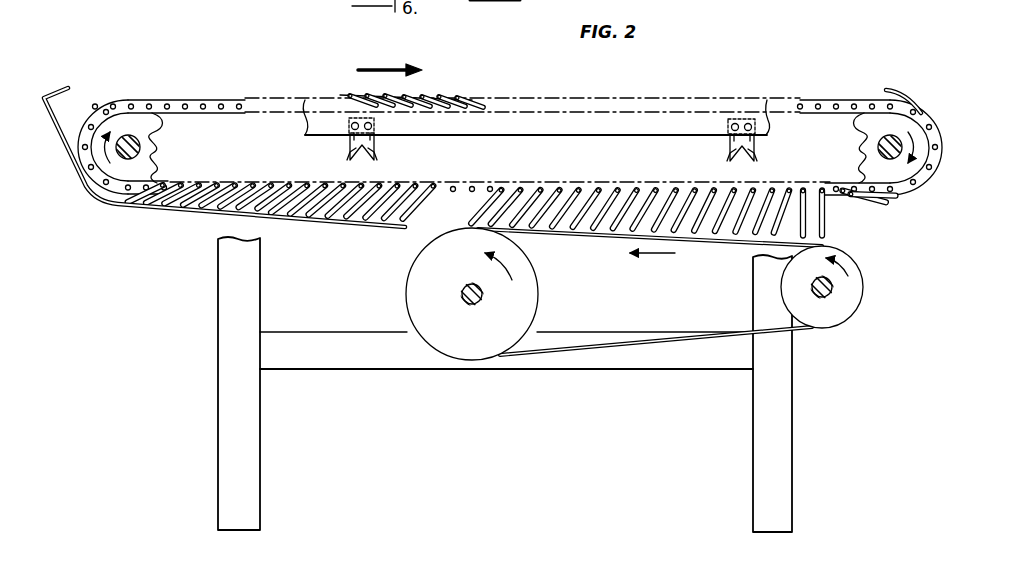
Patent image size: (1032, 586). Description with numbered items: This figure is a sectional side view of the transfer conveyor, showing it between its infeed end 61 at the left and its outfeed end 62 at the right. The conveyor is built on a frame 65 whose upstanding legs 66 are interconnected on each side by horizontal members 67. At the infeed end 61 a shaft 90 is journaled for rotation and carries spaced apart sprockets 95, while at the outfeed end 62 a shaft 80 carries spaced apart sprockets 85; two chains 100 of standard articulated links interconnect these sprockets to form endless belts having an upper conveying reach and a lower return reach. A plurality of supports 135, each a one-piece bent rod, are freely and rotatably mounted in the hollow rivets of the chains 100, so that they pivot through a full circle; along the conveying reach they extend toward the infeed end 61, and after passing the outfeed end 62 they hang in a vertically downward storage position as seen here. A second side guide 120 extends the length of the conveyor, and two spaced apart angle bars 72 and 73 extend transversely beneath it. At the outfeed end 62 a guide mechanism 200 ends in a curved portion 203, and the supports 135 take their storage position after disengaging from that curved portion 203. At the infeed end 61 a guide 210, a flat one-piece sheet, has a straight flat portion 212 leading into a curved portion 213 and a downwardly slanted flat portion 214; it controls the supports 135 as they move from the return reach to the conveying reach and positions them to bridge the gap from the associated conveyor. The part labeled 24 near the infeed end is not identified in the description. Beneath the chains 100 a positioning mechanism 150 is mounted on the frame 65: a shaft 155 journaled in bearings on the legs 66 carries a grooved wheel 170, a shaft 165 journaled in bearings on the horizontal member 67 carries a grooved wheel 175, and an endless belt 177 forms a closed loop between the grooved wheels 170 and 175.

The infeed end 61 is at (503, 137).
The guide plate 24 is at (223, 156).
The shaft 90 is at (131, 137).
The sprockets 95 is at (172, 151).
The straight flat portion 212 is at (223, 178).
The curved portion 213 is at (224, 178).
The guide 210 is at (176, 215).
The downwardly slanted flat portion 214 is at (263, 224).
The supports 135 is at (458, 86).
The angle bar 72 is at (376, 155).
The second side guide 120 is at (622, 137).
The angle bar 73 is at (760, 154).
The chains 100 is at (805, 100).
The guide mechanism 200 is at (906, 90).
The outfeed end 62 is at (946, 56).
The shaft 80 is at (903, 145).
The sprockets 85 is at (845, 156).
The curved portion 203 is at (893, 208).
The grooved wheel 170 is at (849, 287).
The shaft 155 is at (834, 290).
The positioning mechanism 150 is at (567, 380).
The shaft 165 is at (484, 294).
The grooved wheel 175 is at (463, 294).
The horizontal members 67 is at (588, 362).
The endless belt 177 is at (680, 345).
The frame 65 is at (542, 384).
The legs 66 is at (246, 452).